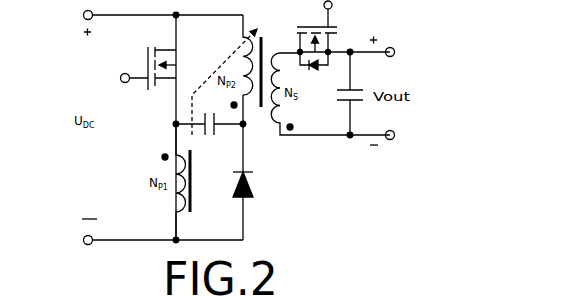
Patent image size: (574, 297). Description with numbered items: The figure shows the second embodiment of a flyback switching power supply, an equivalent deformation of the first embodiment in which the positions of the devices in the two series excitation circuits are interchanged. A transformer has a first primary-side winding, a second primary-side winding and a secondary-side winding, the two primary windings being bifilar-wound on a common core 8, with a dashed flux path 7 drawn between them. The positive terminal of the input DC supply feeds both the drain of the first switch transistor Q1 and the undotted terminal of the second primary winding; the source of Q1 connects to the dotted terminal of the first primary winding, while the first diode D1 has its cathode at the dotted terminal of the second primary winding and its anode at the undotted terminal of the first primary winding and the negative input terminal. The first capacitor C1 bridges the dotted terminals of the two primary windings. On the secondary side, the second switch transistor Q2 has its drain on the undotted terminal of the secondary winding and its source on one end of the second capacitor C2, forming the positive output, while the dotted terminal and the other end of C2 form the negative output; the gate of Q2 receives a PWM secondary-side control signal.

The magnetic flux path 7 is at (228, 75).
The transformer core 8 is at (258, 79).
The first switch transistor Q1 is at (149, 74).
The second switch transistor Q2 is at (339, 35).
The first capacitor C1 is at (209, 133).
The second capacitor C2 is at (352, 95).
The first diode D1 is at (251, 180).